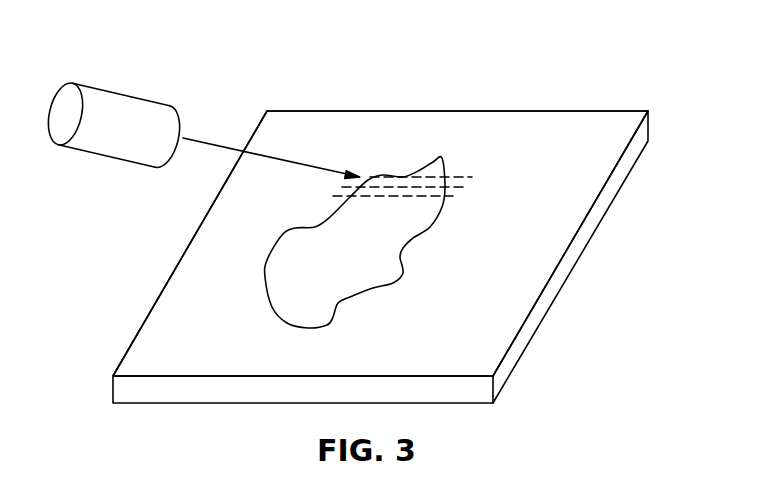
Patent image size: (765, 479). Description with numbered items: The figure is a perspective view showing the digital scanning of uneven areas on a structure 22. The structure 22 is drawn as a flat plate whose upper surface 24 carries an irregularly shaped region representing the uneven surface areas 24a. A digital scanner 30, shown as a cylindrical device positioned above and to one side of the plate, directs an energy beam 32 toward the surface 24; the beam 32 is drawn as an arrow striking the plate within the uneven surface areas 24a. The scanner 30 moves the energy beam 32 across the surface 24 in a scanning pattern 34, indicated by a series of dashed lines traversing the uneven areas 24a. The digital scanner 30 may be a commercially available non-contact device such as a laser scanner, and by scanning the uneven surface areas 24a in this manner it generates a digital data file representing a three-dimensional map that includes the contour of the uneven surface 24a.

The structure 22 is at (285, 125).
The surface 24 is at (167, 323).
The uneven surface areas 24a is at (375, 253).
The digital scanner 30 is at (115, 115).
The energy beam 32 is at (196, 145).
The scanning pattern 34 is at (459, 165).